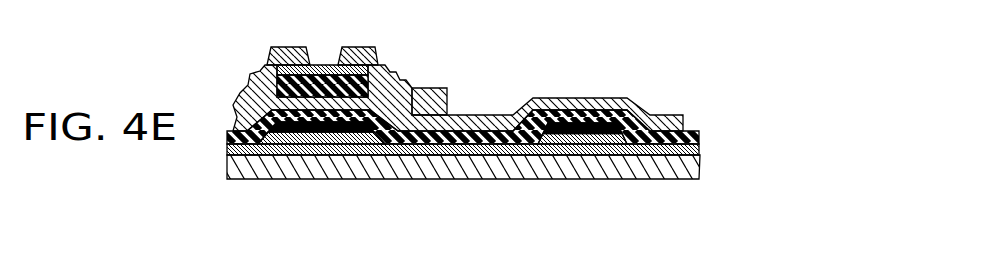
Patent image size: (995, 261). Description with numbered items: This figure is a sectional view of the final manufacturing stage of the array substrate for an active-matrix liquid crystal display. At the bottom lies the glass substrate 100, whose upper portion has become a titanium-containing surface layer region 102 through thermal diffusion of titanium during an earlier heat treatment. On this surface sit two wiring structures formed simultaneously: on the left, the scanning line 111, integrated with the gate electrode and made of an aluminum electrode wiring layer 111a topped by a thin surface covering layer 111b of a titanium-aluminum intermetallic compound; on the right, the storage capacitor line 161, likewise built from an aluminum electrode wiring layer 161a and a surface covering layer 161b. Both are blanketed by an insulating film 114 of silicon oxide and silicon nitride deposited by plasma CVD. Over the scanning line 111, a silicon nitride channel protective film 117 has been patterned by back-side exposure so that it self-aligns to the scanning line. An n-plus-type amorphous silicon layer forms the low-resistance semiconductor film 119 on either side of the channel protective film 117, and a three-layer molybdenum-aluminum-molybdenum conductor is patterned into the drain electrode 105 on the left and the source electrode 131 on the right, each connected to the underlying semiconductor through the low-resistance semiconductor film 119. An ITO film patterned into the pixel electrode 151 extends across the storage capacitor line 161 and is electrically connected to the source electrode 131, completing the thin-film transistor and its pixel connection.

The glass substrate 100 is at (701, 157).
The surface layer region 102 is at (481, 146).
The drain electrode 105 is at (252, 70).
The scanning line 111 is at (325, 190).
The electrode wiring layer 111a is at (299, 152).
The surface covering layer 111b is at (270, 214).
The insulating film 114 is at (695, 132).
The channel protective film 117 is at (322, 76).
The low-resistance semiconductor film 119 is at (288, 47).
The source electrode 131 is at (433, 89).
The pixel electrode 151 is at (673, 115).
The storage capacitor line 161 is at (581, 190).
The electrode wiring layer 161a is at (557, 147).
The surface covering layer 161b is at (590, 170).